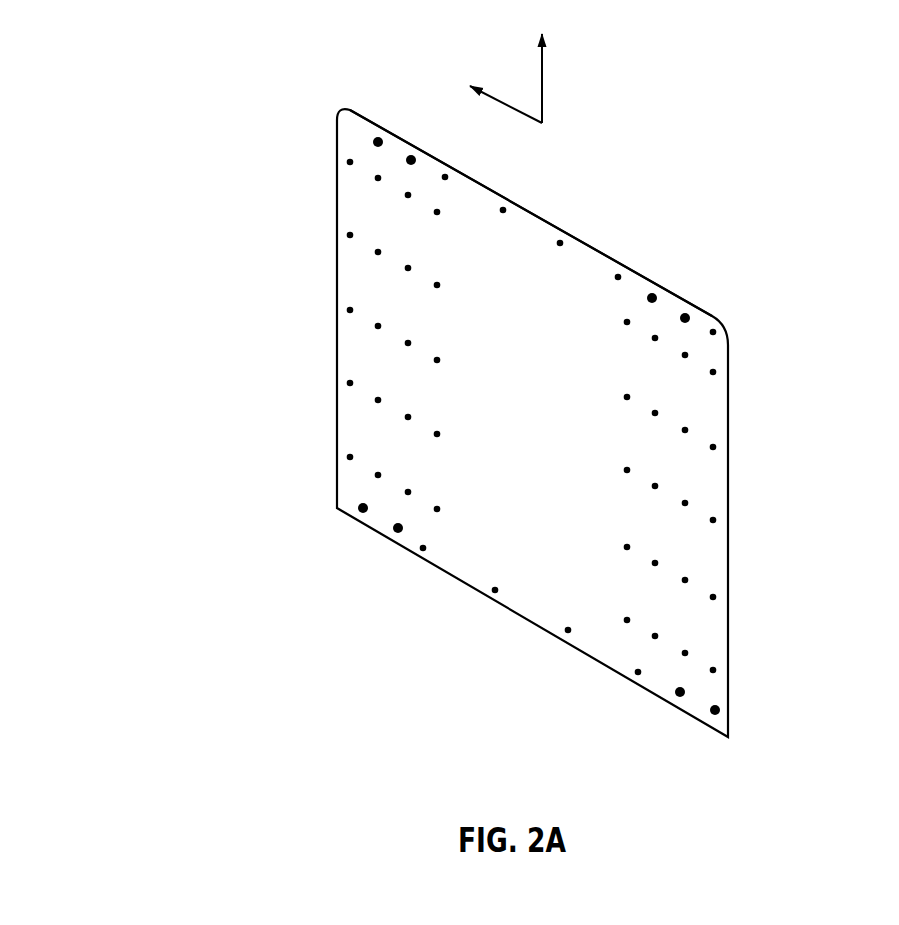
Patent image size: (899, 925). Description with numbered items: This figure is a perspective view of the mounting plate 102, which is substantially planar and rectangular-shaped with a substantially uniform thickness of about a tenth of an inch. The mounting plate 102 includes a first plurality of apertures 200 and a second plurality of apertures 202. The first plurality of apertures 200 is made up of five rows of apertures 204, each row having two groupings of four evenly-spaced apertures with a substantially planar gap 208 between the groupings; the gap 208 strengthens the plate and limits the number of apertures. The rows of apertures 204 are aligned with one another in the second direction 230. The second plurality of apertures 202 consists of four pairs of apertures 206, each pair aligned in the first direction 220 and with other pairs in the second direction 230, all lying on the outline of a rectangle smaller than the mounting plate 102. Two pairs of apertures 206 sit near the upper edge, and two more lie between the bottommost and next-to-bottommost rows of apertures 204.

The mounting plate 102 is at (119, 181).
The first plurality of apertures 200 is at (724, 482).
The second plurality of apertures 202 is at (681, 304).
The rows of apertures 204 is at (727, 374).
The pairs of apertures 206 is at (364, 131).
The gap 208 is at (507, 529).
The first direction 220 is at (500, 103).
The second direction 230 is at (543, 69).